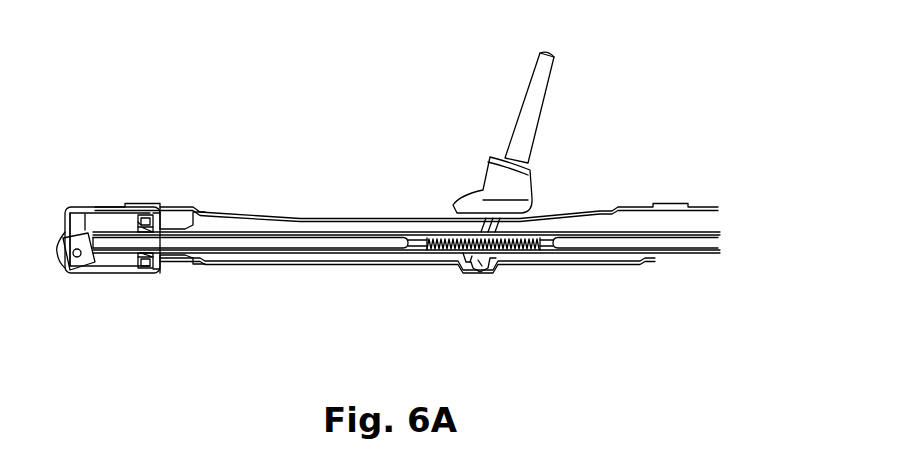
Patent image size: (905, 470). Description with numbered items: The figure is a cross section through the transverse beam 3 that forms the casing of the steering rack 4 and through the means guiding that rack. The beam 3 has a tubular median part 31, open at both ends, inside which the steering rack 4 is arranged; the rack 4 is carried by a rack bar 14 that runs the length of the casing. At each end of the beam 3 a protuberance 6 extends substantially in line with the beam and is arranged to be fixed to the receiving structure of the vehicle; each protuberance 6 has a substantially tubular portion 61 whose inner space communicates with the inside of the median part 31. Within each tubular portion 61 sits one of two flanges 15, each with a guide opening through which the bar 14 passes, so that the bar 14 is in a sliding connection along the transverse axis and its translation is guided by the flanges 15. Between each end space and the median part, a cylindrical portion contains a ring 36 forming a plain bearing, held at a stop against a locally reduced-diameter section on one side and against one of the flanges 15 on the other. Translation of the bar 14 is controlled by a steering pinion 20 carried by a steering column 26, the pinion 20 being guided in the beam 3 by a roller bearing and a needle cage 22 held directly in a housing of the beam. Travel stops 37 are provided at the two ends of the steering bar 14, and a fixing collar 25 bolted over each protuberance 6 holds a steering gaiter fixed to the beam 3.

The transverse beam 3 is at (346, 217).
The steering rack 4 is at (437, 252).
The protuberances 6 is at (75, 212).
The rack bar 14 is at (230, 230).
The flanges 15 is at (148, 222).
The steering pinion 20 is at (470, 224).
The needle cage 22 is at (478, 275).
The fixing collar 25 is at (141, 265).
The steering column 26 is at (547, 87).
The tubular median part 31 is at (307, 232).
The ring 36 is at (160, 250).
The travel stops 37 is at (97, 245).
The tubular portion 61 is at (82, 232).